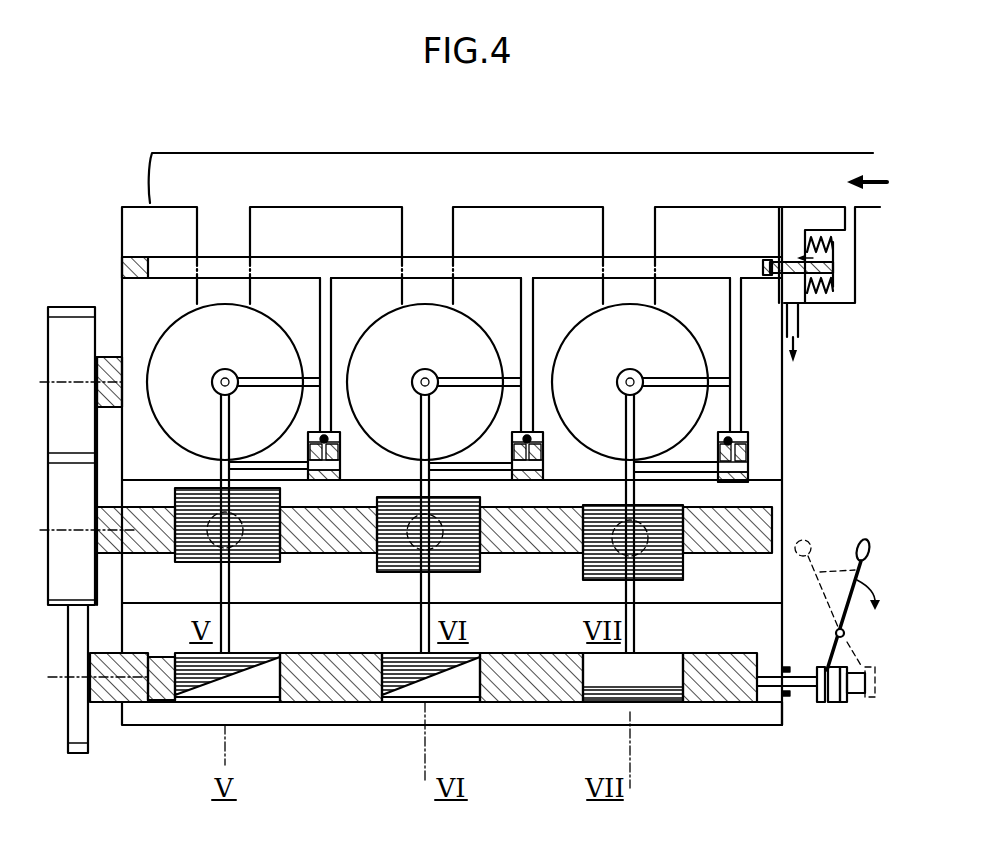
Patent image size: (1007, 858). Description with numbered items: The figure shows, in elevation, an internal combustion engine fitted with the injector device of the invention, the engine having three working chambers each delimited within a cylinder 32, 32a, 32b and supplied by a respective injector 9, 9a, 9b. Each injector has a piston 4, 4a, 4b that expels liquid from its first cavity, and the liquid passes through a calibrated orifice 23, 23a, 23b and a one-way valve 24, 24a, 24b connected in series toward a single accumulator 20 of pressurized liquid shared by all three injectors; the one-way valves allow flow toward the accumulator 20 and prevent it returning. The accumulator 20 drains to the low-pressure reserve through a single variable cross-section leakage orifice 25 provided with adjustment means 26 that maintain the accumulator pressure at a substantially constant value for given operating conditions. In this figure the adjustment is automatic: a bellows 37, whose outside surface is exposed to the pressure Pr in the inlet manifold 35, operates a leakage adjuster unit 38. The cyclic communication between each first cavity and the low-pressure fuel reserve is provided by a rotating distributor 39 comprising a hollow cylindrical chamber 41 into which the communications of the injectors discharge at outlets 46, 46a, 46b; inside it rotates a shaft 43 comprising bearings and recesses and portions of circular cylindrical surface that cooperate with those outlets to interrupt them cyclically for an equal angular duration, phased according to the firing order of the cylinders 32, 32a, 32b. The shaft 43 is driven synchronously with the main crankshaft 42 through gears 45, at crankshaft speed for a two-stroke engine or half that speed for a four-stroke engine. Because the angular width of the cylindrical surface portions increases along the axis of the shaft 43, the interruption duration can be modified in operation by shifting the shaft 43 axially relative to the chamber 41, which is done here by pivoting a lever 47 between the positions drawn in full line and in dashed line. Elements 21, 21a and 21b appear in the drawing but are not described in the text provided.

The piston 4 is at (215, 535).
The piston 4a is at (418, 532).
The piston 4b is at (610, 560).
The injector 9 is at (225, 369).
The injector 9a is at (425, 369).
The injector 9b is at (630, 369).
The accumulator 20 is at (505, 268).
The eccentric gear 21 is at (282, 563).
The eccentric gear 21a is at (482, 573).
The eccentric gear 21b is at (685, 578).
The calibrated orifice 23 is at (340, 452).
The calibrated orifice 23a is at (545, 455).
The calibrated orifice 23b is at (748, 462).
The one-way valve 24 is at (325, 432).
The one-way valve 24a is at (527, 432).
The one-way valve 24b is at (748, 440).
The variable cross-section leakage orifice 25 is at (768, 258).
The adjustment means 26 is at (868, 295).
The cylinder 32 is at (203, 351).
The cylinder 32a is at (376, 351).
The cylinder 32b is at (573, 351).
The inlet manifold 35 is at (352, 178).
The bellows 37 is at (825, 303).
The leakage adjuster unit 38 is at (800, 255).
The rotating distributor 39 is at (257, 704).
The hollow cylindrical chamber 41 is at (350, 712).
The main crankshaft 42 is at (112, 357).
The shaft 43 is at (108, 700).
The gears 45 is at (97, 487).
The outlet 46 is at (248, 648).
The outlet 46a is at (424, 648).
The outlet 46b is at (660, 648).
The lever 47 is at (819, 620).